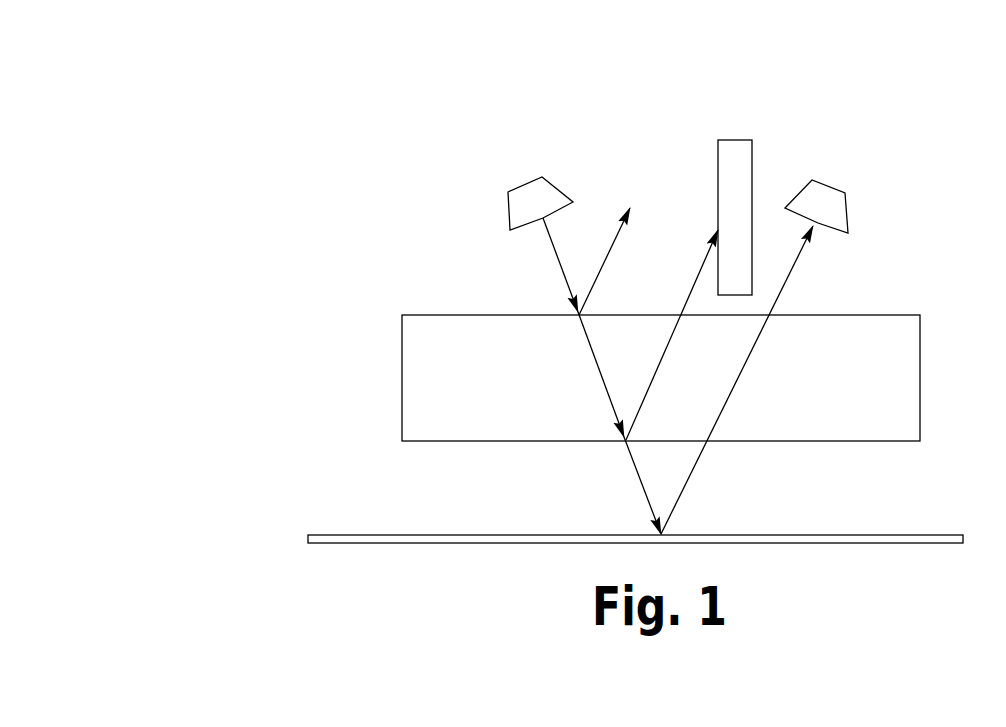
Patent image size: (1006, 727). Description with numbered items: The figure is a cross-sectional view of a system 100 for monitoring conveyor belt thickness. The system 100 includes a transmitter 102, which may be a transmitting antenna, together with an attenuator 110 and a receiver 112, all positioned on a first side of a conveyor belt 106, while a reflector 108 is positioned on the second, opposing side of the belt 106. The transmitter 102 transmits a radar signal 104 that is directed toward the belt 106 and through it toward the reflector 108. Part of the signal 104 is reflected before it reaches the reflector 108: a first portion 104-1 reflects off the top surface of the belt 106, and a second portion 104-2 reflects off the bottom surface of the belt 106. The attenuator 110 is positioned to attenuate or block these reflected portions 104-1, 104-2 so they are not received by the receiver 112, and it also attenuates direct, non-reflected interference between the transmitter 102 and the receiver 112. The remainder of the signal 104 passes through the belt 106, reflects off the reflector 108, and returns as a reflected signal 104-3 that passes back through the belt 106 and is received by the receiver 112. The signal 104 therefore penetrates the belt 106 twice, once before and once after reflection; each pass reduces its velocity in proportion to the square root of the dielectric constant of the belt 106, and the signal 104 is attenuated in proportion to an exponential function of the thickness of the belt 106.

The system 100 is at (888, 58).
The transmitter 102 is at (515, 208).
The signal 104 is at (677, 343).
The first portion of the signal 104-1 is at (607, 257).
The second portion of the signal 104-2 is at (697, 278).
The reflected signal 104-3 is at (800, 272).
The conveyor belt 106 is at (420, 378).
The reflector 108 is at (322, 533).
The attenuator 110 is at (737, 150).
The receiver 112 is at (848, 207).